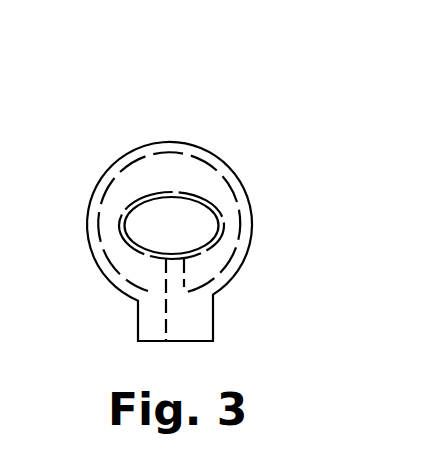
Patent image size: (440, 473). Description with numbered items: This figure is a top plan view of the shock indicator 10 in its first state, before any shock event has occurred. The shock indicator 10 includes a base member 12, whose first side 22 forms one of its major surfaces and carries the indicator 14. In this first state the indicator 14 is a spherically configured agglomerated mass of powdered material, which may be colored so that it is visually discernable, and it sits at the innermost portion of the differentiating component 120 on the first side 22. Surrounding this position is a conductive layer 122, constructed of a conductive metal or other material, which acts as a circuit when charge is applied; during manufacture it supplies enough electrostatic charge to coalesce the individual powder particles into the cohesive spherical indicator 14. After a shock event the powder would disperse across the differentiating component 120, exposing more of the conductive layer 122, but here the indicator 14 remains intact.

The shock indicator 10 is at (179, 206).
The base member 12 is at (165, 137).
The indicator 14 is at (177, 227).
The first side 22 is at (117, 224).
The differentiating component 120 is at (228, 247).
The conductive layer 122 is at (177, 278).